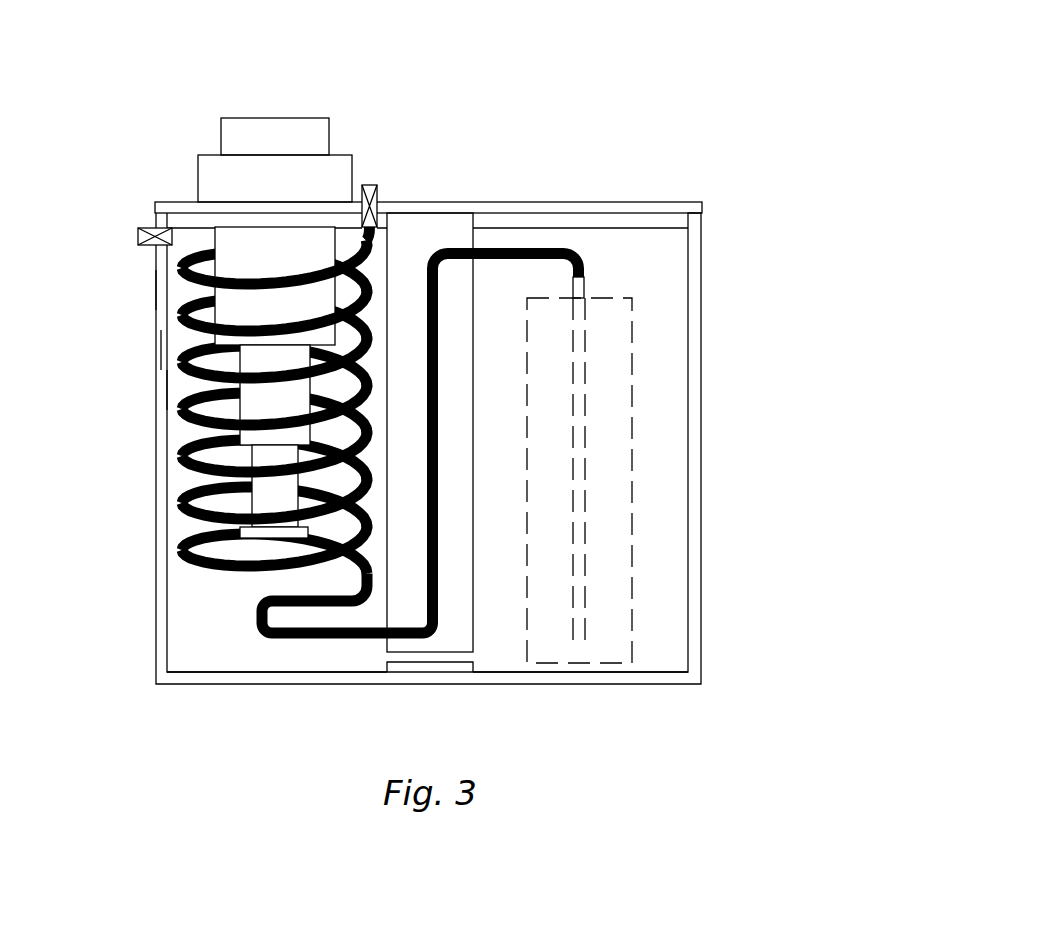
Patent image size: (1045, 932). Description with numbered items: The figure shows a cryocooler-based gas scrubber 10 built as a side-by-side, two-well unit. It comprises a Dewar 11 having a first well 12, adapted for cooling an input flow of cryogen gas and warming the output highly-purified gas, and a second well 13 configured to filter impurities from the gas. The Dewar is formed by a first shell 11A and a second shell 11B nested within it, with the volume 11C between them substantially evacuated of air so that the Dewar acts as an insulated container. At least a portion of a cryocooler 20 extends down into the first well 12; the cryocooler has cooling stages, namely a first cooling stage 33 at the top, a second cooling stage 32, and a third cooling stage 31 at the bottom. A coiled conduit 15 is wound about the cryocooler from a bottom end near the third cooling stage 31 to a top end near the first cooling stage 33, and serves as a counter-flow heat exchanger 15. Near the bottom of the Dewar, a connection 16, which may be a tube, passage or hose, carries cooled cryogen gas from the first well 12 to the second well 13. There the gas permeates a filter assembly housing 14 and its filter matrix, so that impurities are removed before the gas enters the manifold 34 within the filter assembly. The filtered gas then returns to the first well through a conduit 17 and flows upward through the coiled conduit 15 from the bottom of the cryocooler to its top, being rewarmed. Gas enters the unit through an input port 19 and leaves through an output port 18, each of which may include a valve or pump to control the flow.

The cryocooler-based gas scrubber 10 is at (612, 122).
The Dewar 11 is at (700, 280).
The first shell 11A is at (155, 292).
The second shell 11B is at (165, 350).
The volume 11C is at (160, 387).
The first well 12 is at (188, 652).
The second well 13 is at (677, 650).
The filter assembly housing 14 is at (632, 404).
The coiled conduit 15 is at (185, 455).
The connection 16 is at (430, 672).
The conduit 17 is at (447, 250).
The output port 18 is at (368, 184).
The input port 19 is at (130, 237).
The cryocooler 20 is at (267, 118).
The third cooling stage 31 is at (274, 491).
The second cooling stage 32 is at (275, 395).
The first cooling stage 33 is at (275, 286).
The manifold 34 is at (585, 455).